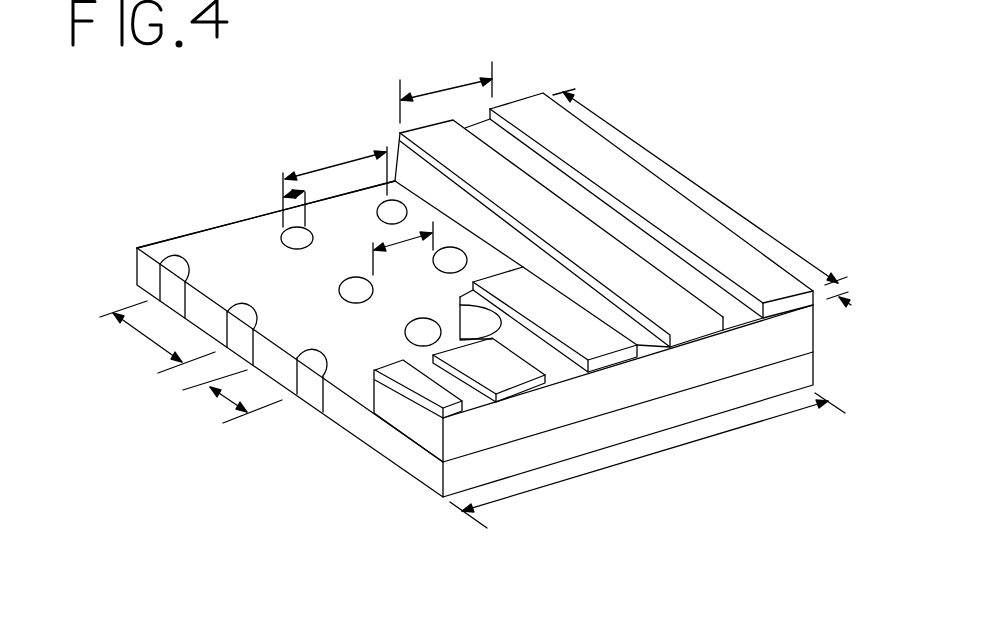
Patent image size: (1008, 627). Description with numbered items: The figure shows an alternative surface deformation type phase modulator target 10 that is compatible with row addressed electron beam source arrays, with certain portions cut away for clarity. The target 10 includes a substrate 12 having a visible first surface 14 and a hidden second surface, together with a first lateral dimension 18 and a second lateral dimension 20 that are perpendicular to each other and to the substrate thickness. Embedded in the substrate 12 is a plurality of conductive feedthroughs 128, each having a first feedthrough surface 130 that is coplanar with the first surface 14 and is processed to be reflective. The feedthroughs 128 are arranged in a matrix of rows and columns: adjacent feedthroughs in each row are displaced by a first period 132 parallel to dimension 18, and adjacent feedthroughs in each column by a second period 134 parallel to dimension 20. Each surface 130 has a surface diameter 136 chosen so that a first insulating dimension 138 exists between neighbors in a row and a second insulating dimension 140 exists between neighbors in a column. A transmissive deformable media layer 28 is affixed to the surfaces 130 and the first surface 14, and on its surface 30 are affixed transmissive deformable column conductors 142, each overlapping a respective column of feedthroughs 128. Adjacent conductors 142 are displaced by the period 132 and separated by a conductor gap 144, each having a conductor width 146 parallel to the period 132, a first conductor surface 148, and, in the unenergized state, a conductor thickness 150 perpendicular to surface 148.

The target 10 is at (720, 173).
The substrate 12 is at (355, 420).
The first surface 14 is at (195, 247).
The first lateral dimension 18 is at (824, 410).
The second lateral dimension 20 is at (605, 116).
The transmissive deformable media layer 28 is at (427, 430).
The surface 30 is at (505, 142).
The conductive feedthroughs 128 is at (310, 388).
The first feedthrough surface 130 is at (323, 362).
The first period 132 is at (338, 166).
The second period 134 is at (133, 330).
The surface diameter 136 is at (283, 202).
The first insulating dimension 138 is at (398, 252).
The second insulating dimension 140 is at (210, 392).
The transmissive deformable column conductors 142 is at (500, 376).
The conductor gap 144 is at (678, 353).
The conductor width 146 is at (644, 359).
The first conductor surface 148 is at (633, 185).
The conductor thickness 150 is at (848, 293).